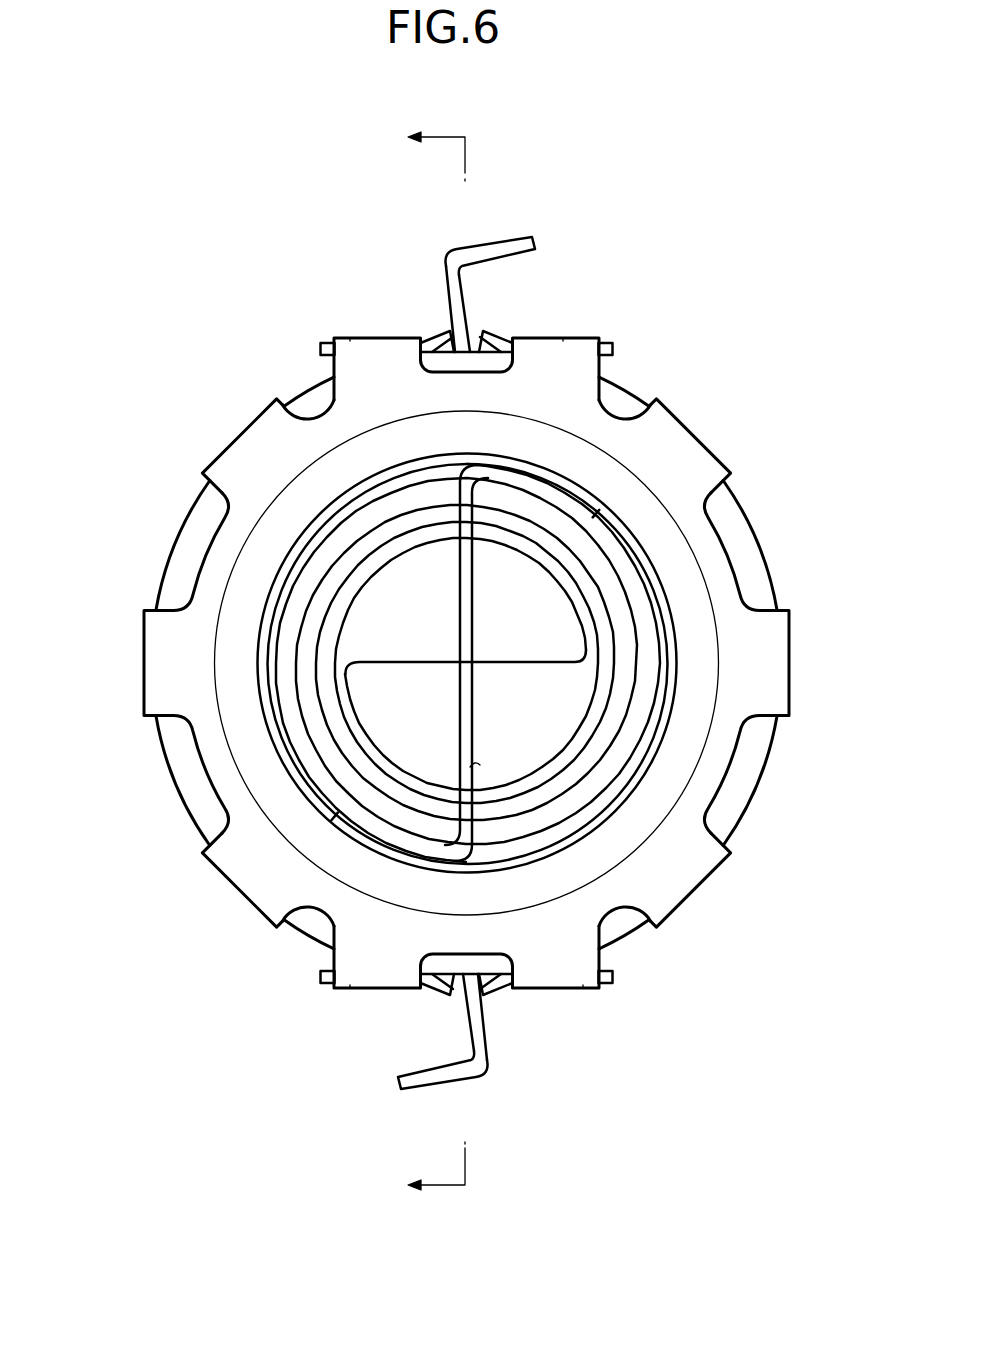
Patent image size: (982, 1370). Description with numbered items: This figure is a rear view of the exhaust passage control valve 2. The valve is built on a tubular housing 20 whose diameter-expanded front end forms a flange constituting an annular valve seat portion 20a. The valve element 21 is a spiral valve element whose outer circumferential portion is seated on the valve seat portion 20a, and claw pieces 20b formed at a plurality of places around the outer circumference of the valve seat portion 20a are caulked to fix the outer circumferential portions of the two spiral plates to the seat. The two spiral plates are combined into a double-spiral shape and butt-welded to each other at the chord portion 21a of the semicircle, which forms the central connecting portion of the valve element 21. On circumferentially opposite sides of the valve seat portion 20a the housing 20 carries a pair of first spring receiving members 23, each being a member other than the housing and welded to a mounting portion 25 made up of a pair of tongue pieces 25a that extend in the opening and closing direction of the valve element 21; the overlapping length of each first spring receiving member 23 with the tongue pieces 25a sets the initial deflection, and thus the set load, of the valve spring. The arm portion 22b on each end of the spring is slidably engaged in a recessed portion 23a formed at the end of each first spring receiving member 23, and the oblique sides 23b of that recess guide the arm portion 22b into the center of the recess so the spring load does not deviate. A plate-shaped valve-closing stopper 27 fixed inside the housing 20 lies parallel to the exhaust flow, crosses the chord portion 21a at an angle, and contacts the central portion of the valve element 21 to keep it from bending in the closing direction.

The exhaust passage control valve 2 is at (628, 335).
The housing 20 is at (660, 600).
The valve seat portion 20a is at (700, 537).
The claw pieces 20b is at (686, 423).
The valve element 21 is at (355, 663).
The chord portion 21a is at (505, 663).
The arm portion 22b is at (451, 292).
The first spring receiving member 23 is at (391, 670).
The recessed portion 23a is at (470, 303).
The oblique sides 23b is at (447, 332).
The mounting portion 25 is at (334, 370).
The tongue pieces 25a is at (350, 337).
The valve-closing stopper 27 is at (470, 767).